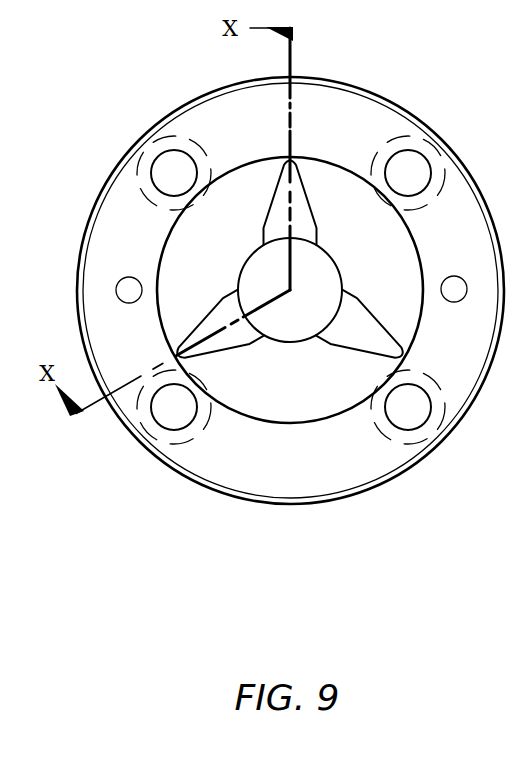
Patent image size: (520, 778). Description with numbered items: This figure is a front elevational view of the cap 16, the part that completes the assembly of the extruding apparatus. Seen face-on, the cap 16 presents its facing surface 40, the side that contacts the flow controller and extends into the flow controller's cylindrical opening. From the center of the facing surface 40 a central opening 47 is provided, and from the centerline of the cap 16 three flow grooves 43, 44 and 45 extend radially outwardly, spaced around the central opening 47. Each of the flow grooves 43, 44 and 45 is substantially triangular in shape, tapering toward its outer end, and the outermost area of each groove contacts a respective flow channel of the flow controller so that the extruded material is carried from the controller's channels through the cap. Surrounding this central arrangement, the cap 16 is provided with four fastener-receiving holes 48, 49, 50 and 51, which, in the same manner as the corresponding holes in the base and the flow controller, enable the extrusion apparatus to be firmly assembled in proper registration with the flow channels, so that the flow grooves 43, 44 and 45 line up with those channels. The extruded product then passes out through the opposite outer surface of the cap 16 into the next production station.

The cap 16 is at (376, 491).
The facing surface 40 is at (338, 187).
The flow groove 43 is at (300, 183).
The flow groove 44 is at (381, 339).
The flow groove 45 is at (224, 345).
The central opening 47 is at (336, 271).
The fastener-receiving hole 48 is at (408, 151).
The fastener-receiving hole 49 is at (159, 163).
The fastener-receiving hole 50 is at (177, 426).
The fastener-receiving hole 51 is at (420, 399).